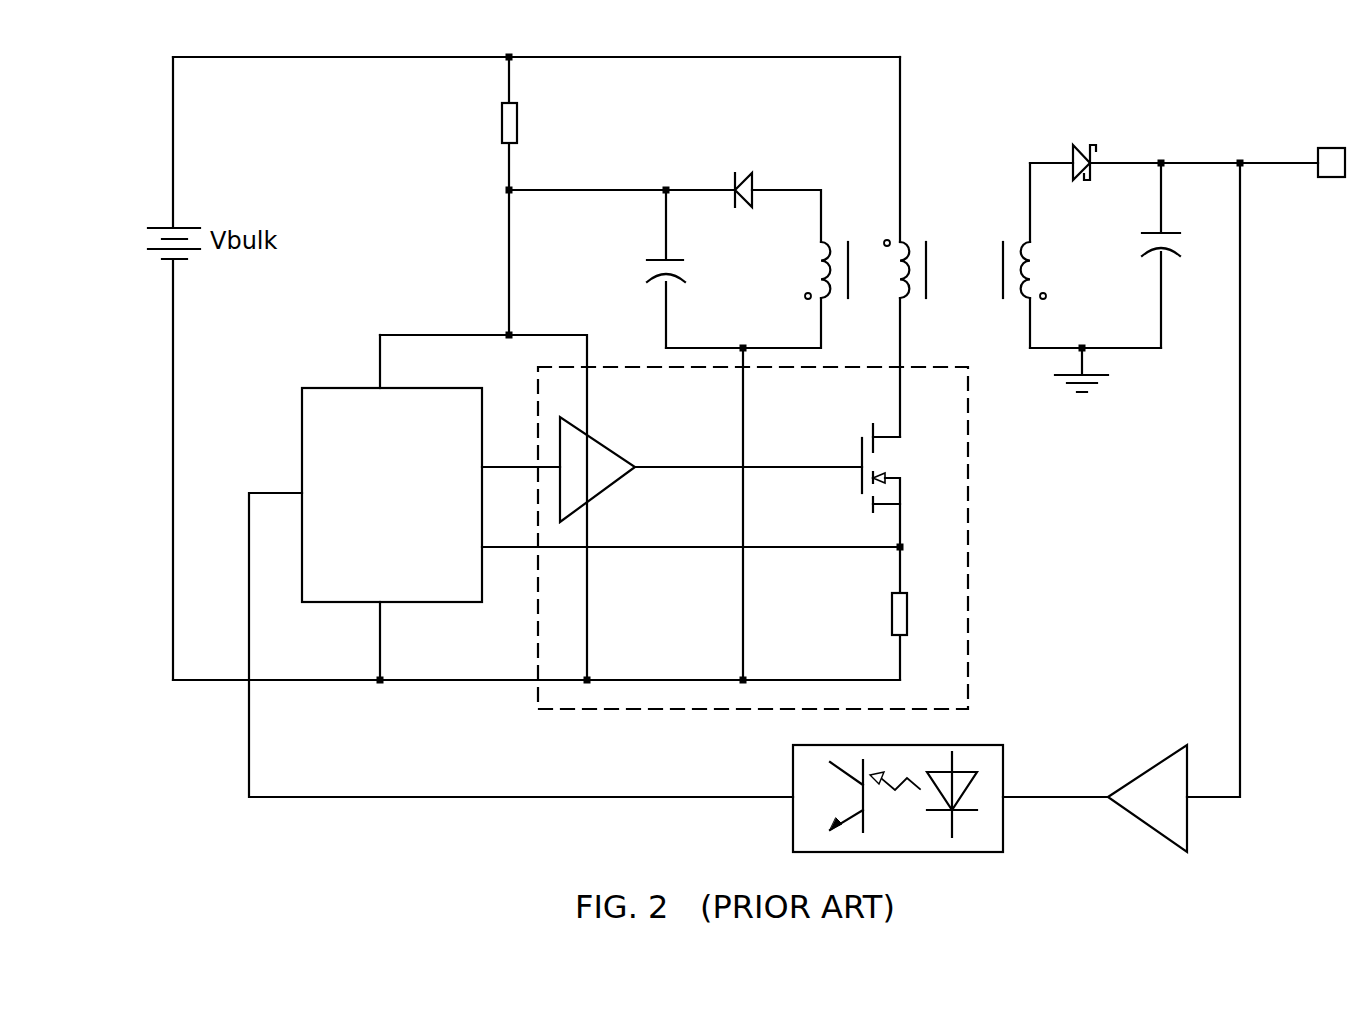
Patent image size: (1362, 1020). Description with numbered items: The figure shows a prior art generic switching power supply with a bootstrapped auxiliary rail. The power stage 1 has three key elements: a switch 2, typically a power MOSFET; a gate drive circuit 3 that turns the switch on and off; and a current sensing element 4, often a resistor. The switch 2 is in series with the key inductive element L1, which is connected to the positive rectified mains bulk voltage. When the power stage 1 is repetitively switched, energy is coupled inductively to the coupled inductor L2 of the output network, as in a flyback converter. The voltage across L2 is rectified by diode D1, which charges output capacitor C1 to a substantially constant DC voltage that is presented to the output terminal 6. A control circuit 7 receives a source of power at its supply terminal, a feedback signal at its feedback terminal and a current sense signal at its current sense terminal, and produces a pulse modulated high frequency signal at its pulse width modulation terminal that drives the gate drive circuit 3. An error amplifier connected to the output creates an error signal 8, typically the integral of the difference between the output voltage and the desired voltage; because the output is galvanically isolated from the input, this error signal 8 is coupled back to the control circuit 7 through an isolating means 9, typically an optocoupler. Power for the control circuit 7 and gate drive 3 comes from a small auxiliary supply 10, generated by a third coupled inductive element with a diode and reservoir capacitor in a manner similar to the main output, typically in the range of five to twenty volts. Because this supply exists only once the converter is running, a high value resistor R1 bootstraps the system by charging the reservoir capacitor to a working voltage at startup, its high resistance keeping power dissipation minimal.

The power stage 1 is at (648, 367).
The switch 2 is at (857, 450).
The gate drive circuit 3 is at (605, 443).
The current sensing element 4 is at (908, 612).
The output terminal 6 is at (1331, 148).
The control circuit 7 is at (338, 388).
The error signal 8 is at (1088, 797).
The isolating means 9 is at (793, 790).
The auxiliary supply 10 is at (593, 188).
The high value resistor R1 is at (531, 123).
The key inductive element L1 is at (915, 253).
The coupled inductor L2 is at (1018, 255).
The diode D1 is at (1174, 148).
The output capacitor C1 is at (1180, 255).